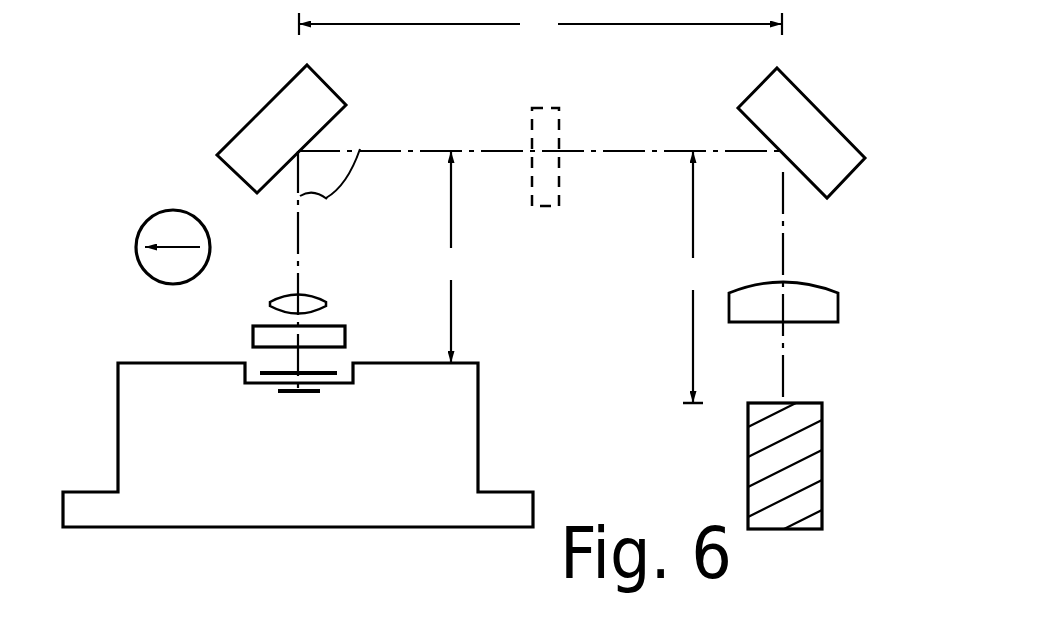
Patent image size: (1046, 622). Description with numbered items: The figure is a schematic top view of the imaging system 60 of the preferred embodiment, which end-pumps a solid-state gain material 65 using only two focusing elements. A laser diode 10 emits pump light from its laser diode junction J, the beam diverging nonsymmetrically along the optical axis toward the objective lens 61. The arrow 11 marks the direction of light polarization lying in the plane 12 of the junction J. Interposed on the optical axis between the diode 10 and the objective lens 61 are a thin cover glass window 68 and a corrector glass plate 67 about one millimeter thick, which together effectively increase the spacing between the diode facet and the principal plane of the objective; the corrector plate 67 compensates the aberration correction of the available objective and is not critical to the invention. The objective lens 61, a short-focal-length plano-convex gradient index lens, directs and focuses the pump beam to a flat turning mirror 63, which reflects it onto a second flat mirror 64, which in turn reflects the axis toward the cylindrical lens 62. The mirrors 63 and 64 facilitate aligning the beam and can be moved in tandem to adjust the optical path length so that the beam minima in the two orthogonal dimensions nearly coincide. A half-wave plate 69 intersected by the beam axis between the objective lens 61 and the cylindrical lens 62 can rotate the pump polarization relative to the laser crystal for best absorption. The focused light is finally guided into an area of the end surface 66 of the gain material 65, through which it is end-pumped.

The imaging system 60 is at (172, 122).
The flat turning mirror 63 is at (268, 112).
The flat mirror 64 is at (812, 118).
The half-wave plate 69 is at (540, 108).
The arrow 11 is at (165, 210).
The objective lens 61 is at (270, 299).
The corrector glass plate 67 is at (345, 330).
The cover glass window 68 is at (337, 373).
The plane of junction 12 is at (352, 391).
The laser diode 10 is at (298, 400).
The laser diode junction J is at (268, 392).
The cylindrical lens 62 is at (812, 282).
The end surface of gain material 66 is at (800, 403).
The solid-state gain material 65 is at (825, 516).